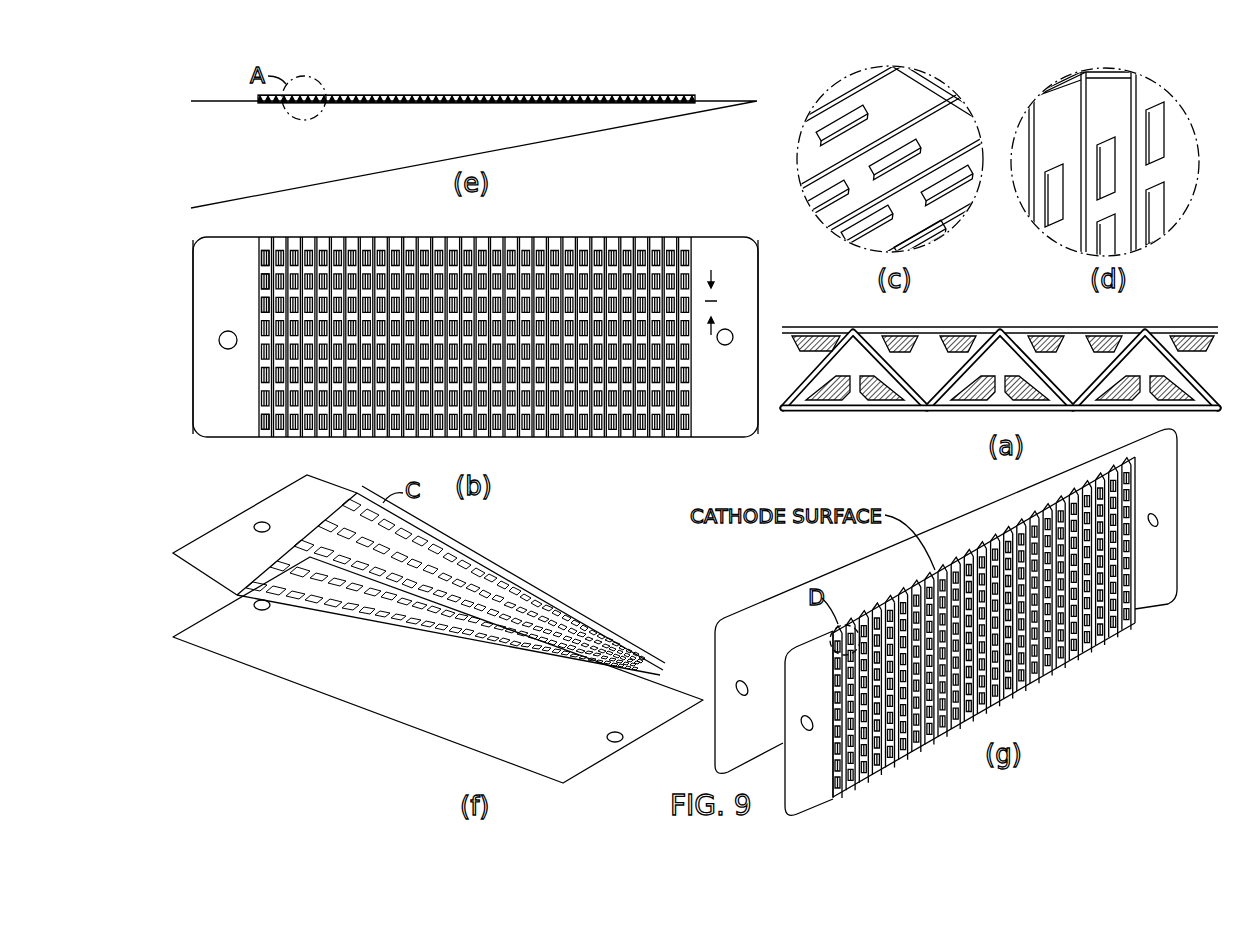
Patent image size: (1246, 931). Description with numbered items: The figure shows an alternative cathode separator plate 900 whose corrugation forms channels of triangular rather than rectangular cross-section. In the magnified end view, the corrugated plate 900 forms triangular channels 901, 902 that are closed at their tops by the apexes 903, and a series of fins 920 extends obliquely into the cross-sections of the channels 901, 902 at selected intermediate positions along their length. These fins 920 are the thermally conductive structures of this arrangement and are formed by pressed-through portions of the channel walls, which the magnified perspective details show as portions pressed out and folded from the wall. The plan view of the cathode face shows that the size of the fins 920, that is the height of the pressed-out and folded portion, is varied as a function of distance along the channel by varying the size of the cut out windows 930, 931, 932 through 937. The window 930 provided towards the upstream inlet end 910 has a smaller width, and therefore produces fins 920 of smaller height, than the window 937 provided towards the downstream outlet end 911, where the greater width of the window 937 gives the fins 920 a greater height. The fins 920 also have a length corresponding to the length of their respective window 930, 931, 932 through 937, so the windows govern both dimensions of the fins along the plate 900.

The plate 900 is at (499, 222).
The triangular channel 901 is at (903, 401).
The triangular channel 902 is at (932, 344).
The apex 903 is at (853, 330).
The upstream inlet end 910 is at (397, 240).
The downstream outlet end 911 is at (386, 436).
The fin 920 is at (925, 148).
The cut out window 930 is at (265, 262).
The cut out window 931 is at (265, 282).
The cut out window 932 is at (265, 305).
The cut out window 937 is at (265, 422).